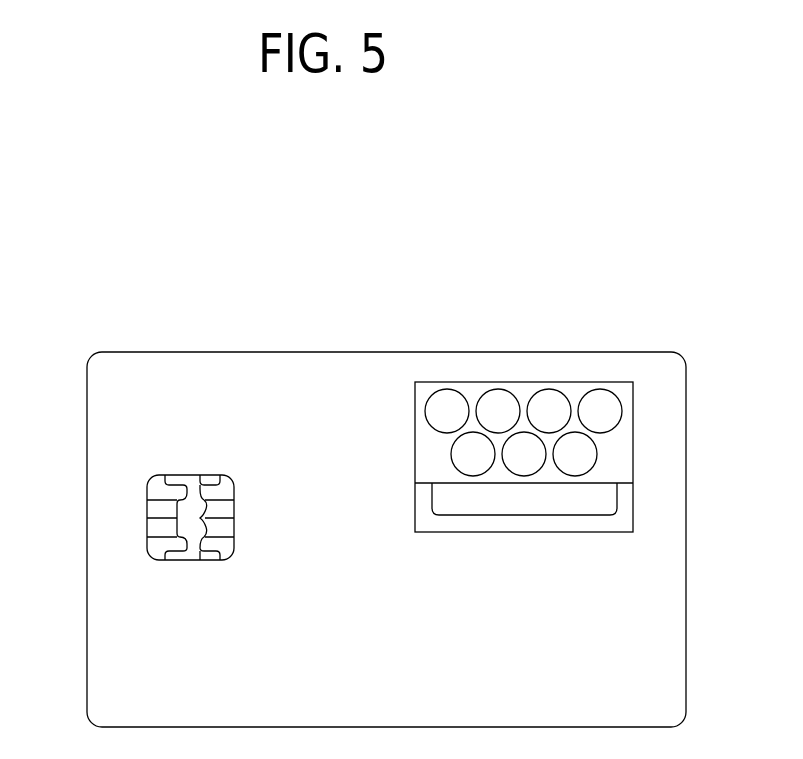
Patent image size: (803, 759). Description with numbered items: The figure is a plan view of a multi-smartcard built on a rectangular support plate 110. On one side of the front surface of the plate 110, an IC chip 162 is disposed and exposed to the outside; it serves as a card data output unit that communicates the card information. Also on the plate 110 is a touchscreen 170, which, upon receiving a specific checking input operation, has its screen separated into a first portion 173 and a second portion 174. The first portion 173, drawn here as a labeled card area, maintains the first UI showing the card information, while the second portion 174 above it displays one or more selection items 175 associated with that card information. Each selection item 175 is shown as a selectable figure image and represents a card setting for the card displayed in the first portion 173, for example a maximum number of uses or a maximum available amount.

The plate 110 is at (240, 372).
The IC chip 162 is at (147, 508).
The touchscreen 170 is at (597, 381).
The first portion 173 is at (623, 503).
The second portion 174 is at (617, 452).
The selection item 175 is at (611, 413).